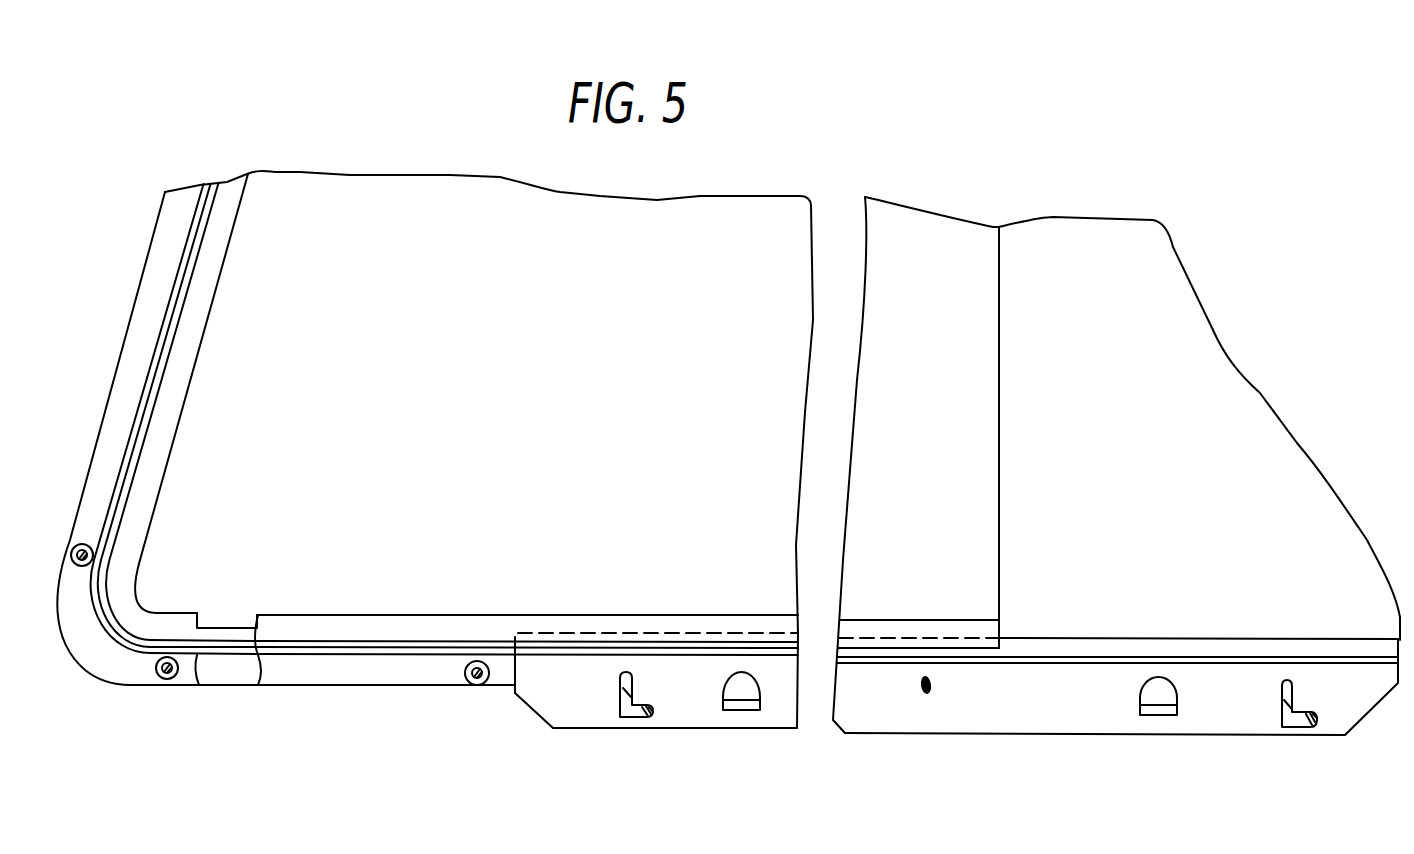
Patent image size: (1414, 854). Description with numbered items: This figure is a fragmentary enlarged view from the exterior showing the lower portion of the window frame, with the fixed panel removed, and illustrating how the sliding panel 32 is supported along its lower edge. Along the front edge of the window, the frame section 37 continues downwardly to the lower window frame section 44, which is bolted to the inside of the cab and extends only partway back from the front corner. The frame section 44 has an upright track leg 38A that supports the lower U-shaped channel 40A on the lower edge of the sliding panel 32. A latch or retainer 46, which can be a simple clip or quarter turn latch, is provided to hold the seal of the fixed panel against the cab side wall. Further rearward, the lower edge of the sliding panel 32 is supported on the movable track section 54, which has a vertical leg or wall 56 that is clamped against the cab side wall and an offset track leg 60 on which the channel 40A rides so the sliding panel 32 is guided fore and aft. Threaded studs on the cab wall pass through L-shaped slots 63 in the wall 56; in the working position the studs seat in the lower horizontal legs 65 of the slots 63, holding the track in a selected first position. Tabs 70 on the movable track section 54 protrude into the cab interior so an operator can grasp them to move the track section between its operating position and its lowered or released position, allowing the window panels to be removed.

The sliding panel 32 is at (710, 223).
The frame section 37 is at (148, 330).
The upright track leg 38A is at (233, 640).
The U-shaped channel 40A is at (457, 630).
The lower window frame section 44 is at (292, 665).
The latch or retainer 46 is at (98, 647).
The movable track section 54 is at (927, 678).
The vertical leg or wall 56 is at (985, 713).
The track leg 60 is at (1043, 645).
The L-shaped slots 63 is at (628, 670).
The lower horizontal legs 65 is at (640, 717).
The tabs 70 is at (740, 710).